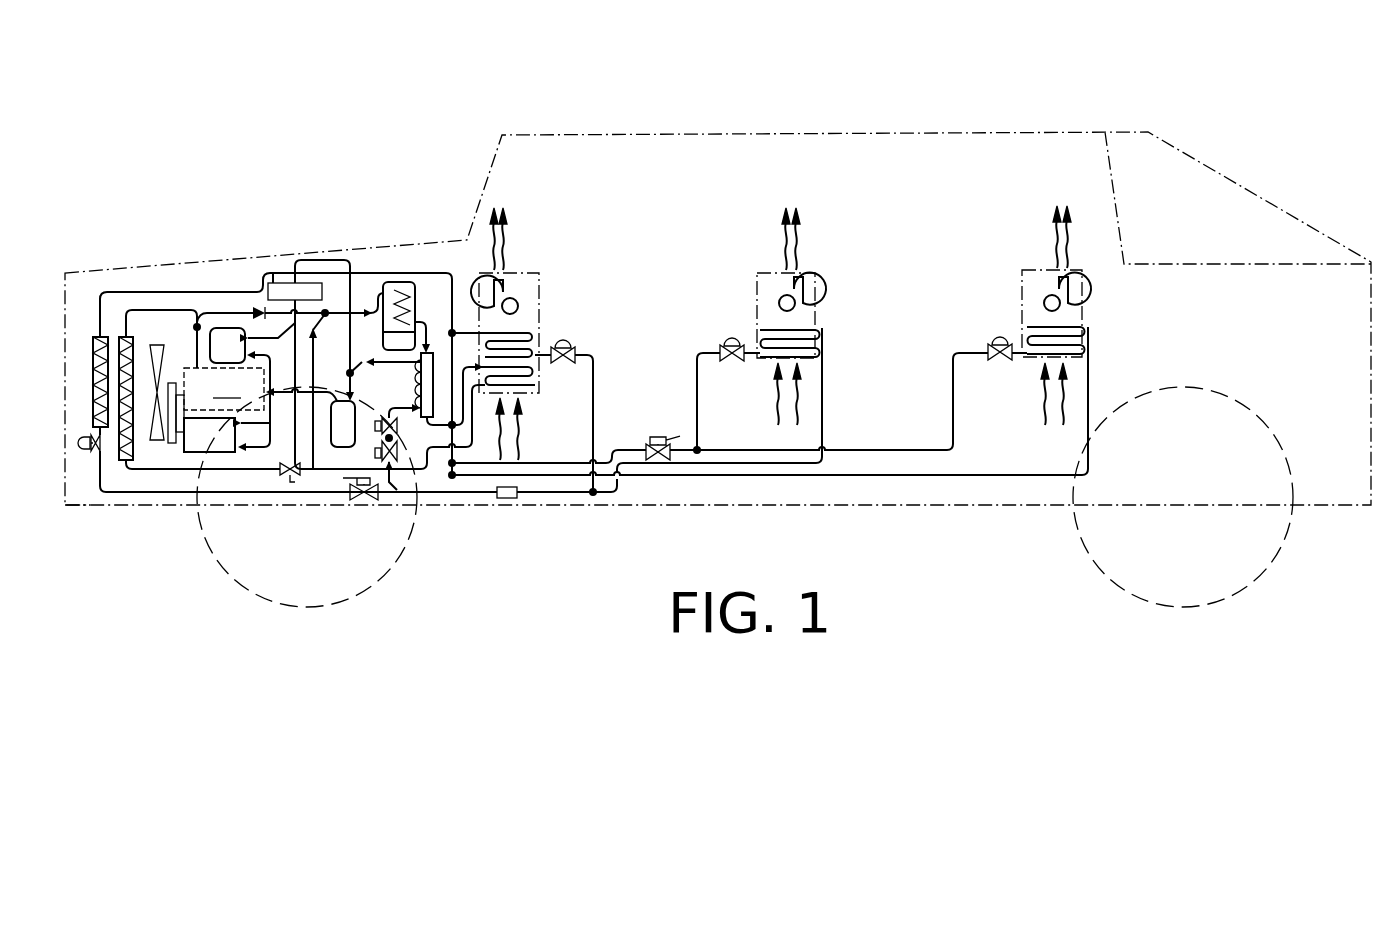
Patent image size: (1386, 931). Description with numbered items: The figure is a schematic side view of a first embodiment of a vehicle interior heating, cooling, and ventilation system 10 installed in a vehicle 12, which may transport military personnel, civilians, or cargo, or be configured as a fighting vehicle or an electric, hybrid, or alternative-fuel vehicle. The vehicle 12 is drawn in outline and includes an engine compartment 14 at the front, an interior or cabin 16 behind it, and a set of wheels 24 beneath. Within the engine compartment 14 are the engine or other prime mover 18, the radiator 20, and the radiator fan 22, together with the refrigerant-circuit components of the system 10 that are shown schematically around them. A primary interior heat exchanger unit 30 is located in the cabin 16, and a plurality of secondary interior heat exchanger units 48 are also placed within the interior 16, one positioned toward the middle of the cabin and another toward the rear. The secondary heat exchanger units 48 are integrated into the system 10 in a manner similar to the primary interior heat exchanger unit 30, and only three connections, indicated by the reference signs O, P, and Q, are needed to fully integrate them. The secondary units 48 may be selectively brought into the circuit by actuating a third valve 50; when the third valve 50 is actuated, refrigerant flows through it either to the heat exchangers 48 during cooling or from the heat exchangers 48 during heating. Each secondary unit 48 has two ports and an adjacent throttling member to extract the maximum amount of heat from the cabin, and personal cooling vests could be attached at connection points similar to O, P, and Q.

The vehicle interior heating, cooling, and ventilation (VIHCV) system 10 is at (876, 548).
The vehicle 12 is at (818, 128).
The engine compartment 14 is at (86, 507).
The interior or cabin 16 is at (733, 208).
The engine or other prime mover 18 is at (253, 367).
The radiator 20 is at (128, 330).
The radiator fan 22 is at (147, 447).
The set of wheels 24 is at (320, 578).
The primary interior heat exchanger unit 30 is at (540, 298).
The secondary interior heat exchanger unit 48 is at (815, 301).
The third valve 50 is at (668, 432).
The connection O is at (701, 462).
The connection P is at (630, 478).
The connection Q is at (536, 495).